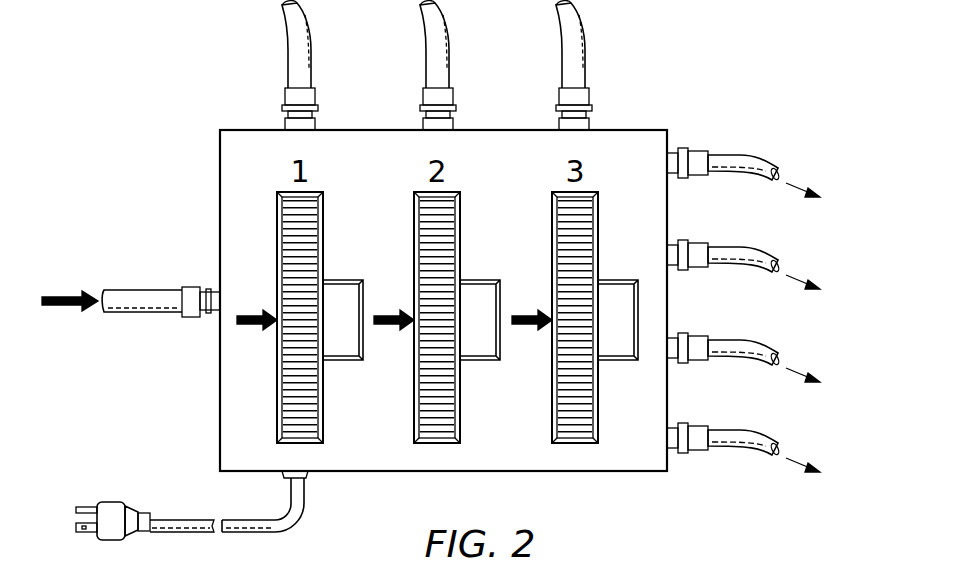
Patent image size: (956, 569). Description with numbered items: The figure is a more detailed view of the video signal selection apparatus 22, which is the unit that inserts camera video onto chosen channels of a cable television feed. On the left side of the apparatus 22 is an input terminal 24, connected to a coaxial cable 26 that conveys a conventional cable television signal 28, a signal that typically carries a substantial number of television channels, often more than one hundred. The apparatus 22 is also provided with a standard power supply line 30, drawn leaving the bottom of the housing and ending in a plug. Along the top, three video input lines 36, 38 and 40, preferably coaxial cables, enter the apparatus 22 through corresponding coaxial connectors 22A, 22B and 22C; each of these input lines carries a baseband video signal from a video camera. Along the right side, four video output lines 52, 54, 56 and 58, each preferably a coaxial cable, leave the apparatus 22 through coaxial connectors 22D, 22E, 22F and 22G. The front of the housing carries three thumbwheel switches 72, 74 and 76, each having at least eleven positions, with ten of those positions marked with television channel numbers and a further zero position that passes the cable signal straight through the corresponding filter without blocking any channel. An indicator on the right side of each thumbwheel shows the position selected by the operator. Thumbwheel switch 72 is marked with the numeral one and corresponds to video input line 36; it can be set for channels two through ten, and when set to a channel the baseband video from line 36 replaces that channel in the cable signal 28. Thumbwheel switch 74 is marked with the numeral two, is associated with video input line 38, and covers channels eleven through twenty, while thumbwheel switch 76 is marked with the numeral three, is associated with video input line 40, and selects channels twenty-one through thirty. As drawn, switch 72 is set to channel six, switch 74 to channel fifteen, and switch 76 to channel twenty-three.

The video signal selection apparatus 22 is at (128, 108).
The coaxial connector 22A is at (318, 125).
The coaxial connector 22B is at (455, 125).
The coaxial connector 22C is at (592, 125).
The coaxial connector 22D is at (680, 150).
The coaxial connector 22E is at (680, 242).
The coaxial connector 22F is at (680, 335).
The coaxial connector 22G is at (680, 425).
The input terminal 24 is at (210, 288).
The coaxial cable 26 is at (144, 312).
The cable television signal 28 is at (62, 295).
The power supply line 30 is at (174, 518).
The video input line 36 is at (288, 52).
The video input line 38 is at (426, 52).
The video input line 40 is at (562, 52).
The video output line 52 is at (766, 158).
The video output line 54 is at (766, 250).
The video output line 56 is at (766, 343).
The video output line 58 is at (766, 433).
The thumbwheel switch 72 is at (277, 275).
The thumbwheel switch 74 is at (414, 275).
The thumbwheel switch 76 is at (552, 275).